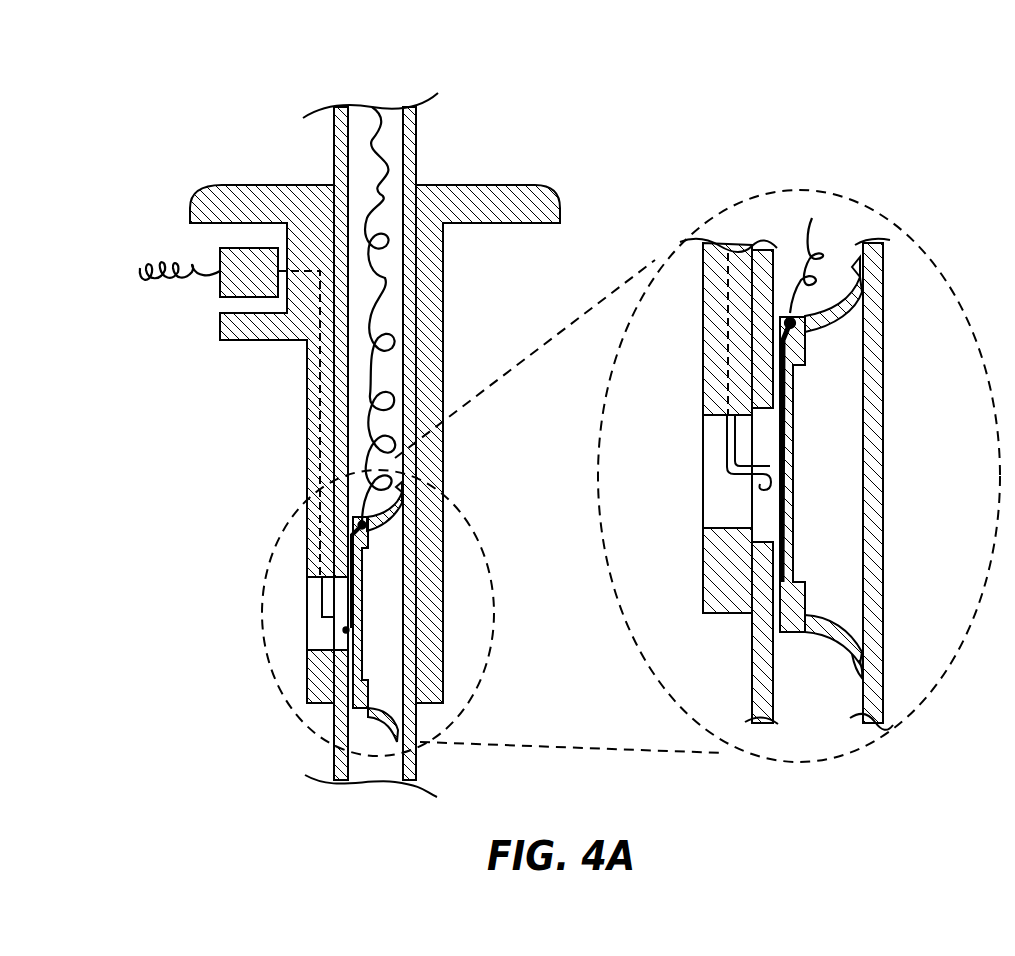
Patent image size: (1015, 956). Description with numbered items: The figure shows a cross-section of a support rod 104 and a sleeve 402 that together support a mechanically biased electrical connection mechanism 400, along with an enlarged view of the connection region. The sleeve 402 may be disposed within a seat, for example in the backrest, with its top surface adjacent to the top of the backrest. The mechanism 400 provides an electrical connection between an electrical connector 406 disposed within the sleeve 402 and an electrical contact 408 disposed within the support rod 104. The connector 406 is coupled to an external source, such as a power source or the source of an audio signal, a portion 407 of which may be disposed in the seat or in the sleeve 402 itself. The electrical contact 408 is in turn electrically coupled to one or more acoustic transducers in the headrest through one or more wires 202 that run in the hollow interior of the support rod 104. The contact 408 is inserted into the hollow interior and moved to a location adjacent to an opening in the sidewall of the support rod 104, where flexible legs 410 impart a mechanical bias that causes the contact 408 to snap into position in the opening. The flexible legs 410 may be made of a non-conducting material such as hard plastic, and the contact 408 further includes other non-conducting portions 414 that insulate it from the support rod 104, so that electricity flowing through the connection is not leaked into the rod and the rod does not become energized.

The mechanically biased electrical connection mechanism 400 is at (767, 112).
The sleeve 402 is at (230, 190).
The wires 202 is at (351, 125).
The support rod 104 is at (420, 152).
The portion of external source 407 is at (243, 288).
The electrical connector 406 is at (730, 472).
The electrical contact 408 is at (805, 360).
The flexible legs 410 is at (865, 262).
The non-conducting portions 414 is at (770, 340).